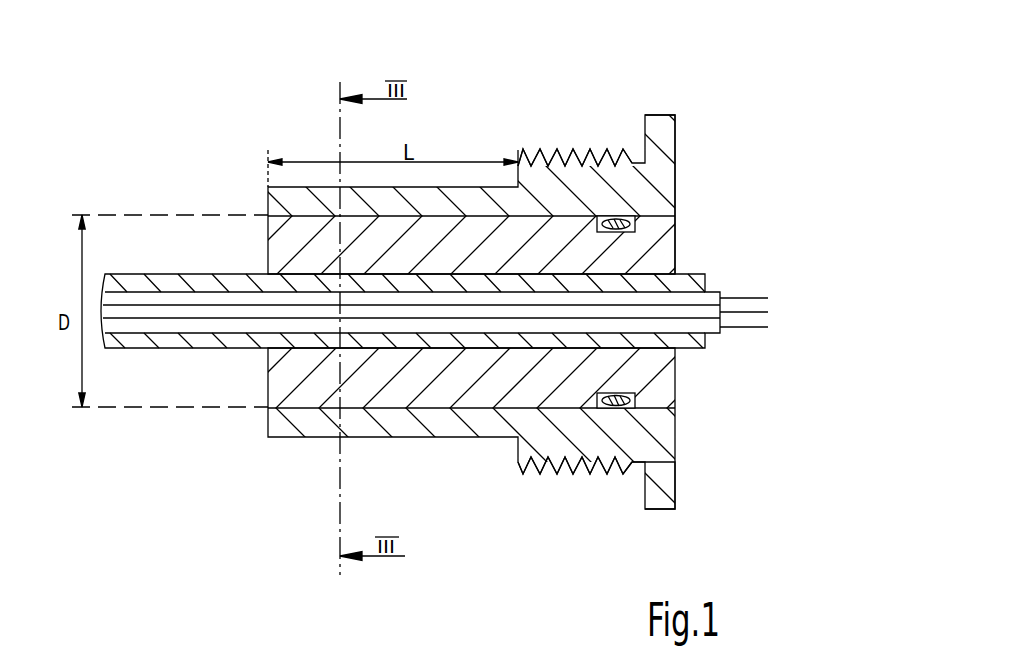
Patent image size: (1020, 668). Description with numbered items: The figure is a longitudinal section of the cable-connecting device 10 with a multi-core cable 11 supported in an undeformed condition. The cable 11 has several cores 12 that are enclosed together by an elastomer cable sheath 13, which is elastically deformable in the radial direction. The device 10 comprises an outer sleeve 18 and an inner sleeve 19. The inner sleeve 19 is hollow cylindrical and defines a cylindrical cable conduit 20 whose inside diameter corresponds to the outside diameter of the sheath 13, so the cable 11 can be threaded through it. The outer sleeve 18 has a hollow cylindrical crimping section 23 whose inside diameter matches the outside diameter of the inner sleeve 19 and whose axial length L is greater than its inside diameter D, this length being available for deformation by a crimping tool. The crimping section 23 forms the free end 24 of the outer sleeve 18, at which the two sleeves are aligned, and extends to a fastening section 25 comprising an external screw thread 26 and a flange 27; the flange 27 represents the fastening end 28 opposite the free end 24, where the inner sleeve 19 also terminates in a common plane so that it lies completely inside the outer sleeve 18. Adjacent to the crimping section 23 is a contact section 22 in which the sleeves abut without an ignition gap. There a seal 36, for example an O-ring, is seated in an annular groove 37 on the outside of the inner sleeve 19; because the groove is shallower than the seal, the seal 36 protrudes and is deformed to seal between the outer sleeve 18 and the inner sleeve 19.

The cable-connecting device 10 is at (723, 133).
The cable 11 is at (742, 270).
The core 12 is at (122, 297).
The cable sheath 13 is at (195, 338).
The outer sleeve 18 is at (533, 120).
The inner sleeve 19 is at (420, 388).
The cable conduit 20 is at (262, 287).
The contact section 22 is at (562, 208).
The crimping section 23 is at (310, 418).
The free end 24 is at (268, 202).
The fastening section 25 is at (598, 512).
The external screw thread 26 is at (550, 476).
The flange 27 is at (653, 511).
The fastening end 28 is at (675, 452).
The seal 36 is at (635, 395).
The annular groove 37 is at (633, 232).